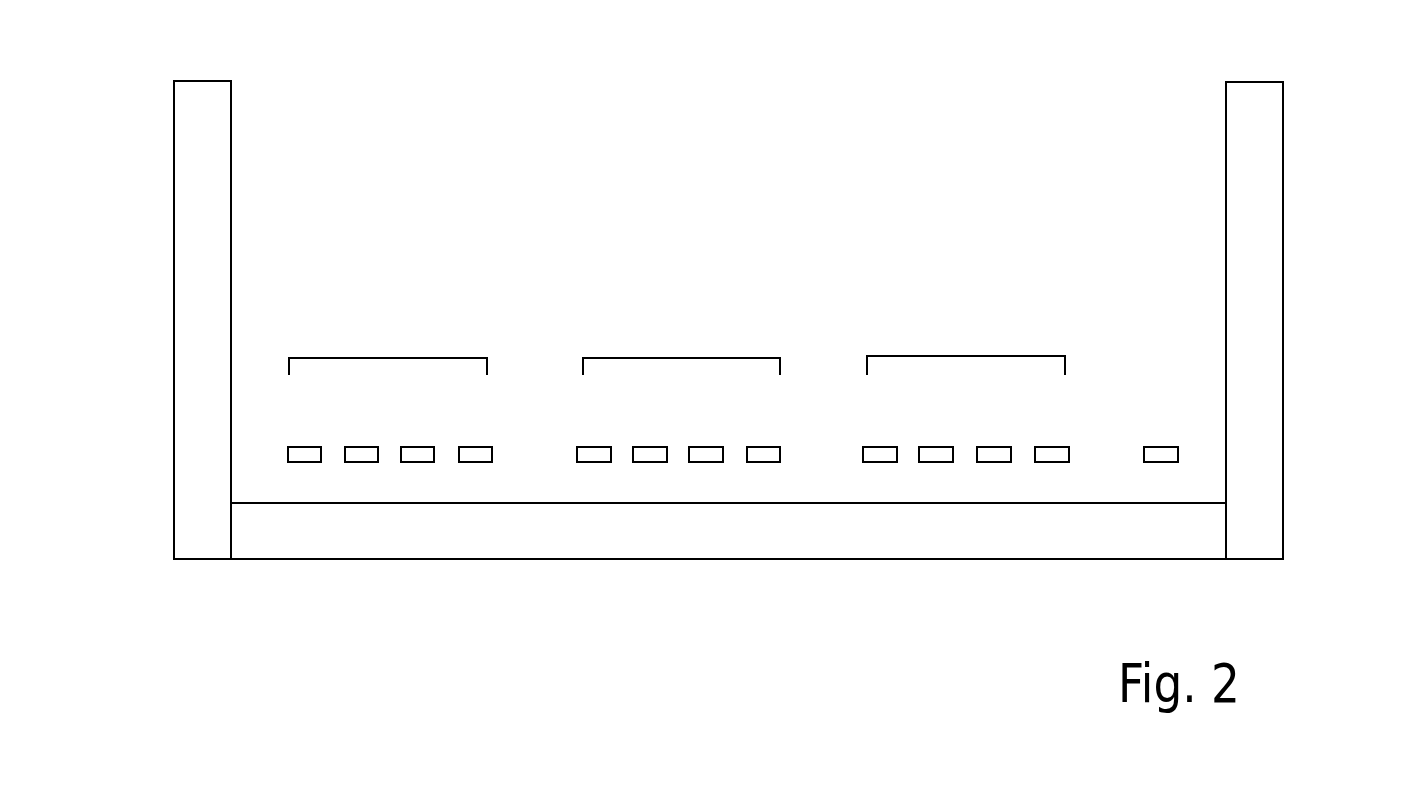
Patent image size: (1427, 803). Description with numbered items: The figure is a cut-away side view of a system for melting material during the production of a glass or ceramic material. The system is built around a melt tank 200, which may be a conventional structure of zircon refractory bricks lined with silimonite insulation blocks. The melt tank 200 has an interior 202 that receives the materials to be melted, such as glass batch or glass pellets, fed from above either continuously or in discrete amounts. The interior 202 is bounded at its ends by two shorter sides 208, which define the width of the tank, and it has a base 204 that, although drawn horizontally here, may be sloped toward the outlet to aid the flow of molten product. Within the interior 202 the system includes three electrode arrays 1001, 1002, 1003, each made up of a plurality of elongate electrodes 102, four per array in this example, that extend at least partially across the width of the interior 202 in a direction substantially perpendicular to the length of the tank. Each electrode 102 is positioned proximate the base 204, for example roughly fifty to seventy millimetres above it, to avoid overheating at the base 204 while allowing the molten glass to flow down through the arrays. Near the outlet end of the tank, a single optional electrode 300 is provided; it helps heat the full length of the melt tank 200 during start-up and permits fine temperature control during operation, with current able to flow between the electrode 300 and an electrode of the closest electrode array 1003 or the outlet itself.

The melt tank 200 is at (734, 355).
The interior 202 is at (765, 132).
The base 204 is at (841, 503).
The shorter sides 208 is at (174, 386).
The electrode array 1001 is at (391, 358).
The electrode array 1002 is at (684, 358).
The electrode array 1003 is at (968, 356).
The elongate electrodes 102 is at (480, 462).
The optional electrode 300 is at (1163, 462).